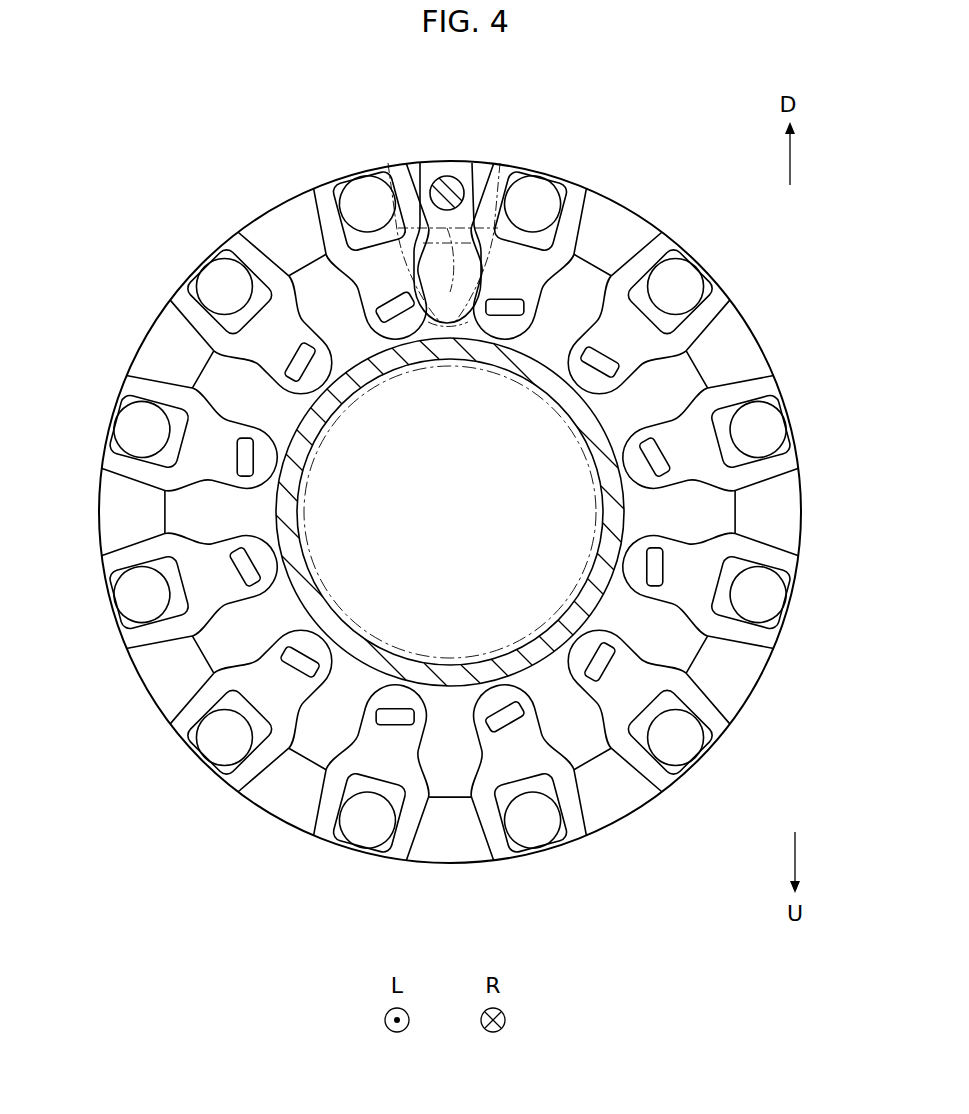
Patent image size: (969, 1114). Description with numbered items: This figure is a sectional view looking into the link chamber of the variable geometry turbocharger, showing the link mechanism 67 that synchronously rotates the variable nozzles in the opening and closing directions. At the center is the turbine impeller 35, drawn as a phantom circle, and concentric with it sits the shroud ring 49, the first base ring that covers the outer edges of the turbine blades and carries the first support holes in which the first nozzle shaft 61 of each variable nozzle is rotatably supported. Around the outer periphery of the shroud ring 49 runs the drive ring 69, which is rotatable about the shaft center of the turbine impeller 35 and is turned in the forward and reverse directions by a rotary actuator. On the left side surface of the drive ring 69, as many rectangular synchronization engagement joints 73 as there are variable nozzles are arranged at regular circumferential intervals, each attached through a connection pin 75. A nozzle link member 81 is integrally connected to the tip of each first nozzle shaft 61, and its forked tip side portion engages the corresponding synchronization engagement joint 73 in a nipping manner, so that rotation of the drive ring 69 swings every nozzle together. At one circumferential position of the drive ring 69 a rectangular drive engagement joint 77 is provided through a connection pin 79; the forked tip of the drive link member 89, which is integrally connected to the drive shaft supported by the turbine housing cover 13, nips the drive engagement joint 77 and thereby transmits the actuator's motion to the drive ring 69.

The turbine housing cover 13 is at (452, 680).
The turbine impeller 35 is at (586, 426).
The shroud ring 49 is at (712, 513).
The first nozzle shaft 61 is at (312, 372).
The link mechanism 67 is at (734, 278).
The drive ring 69 is at (625, 222).
The synchronization engagement joint 73 is at (186, 284).
The connection pin 75 is at (211, 265).
The drive engagement joint 77 is at (447, 256).
The connection pin 79 is at (447, 176).
The nozzle link member 81 is at (247, 243).
The drive link member 89 is at (400, 168).